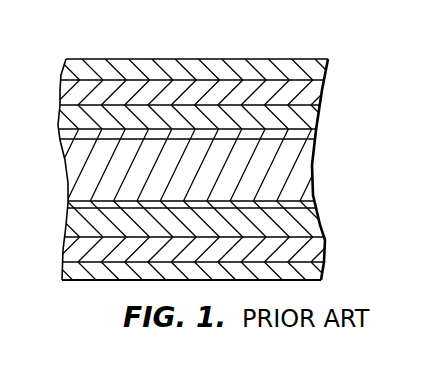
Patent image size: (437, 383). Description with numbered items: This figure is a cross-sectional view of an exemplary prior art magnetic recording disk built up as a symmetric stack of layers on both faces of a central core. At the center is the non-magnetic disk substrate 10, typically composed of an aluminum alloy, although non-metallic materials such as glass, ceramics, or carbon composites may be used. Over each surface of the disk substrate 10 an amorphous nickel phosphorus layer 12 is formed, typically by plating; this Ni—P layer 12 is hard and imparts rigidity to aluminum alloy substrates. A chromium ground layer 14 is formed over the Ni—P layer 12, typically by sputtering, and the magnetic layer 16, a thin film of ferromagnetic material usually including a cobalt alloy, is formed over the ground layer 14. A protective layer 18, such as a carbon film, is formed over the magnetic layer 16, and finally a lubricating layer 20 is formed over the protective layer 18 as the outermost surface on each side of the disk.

The non-magnetic disk substrate 10 is at (295, 173).
The amorphous nickel phosphorus layer 12 is at (297, 138).
The chromium ground layer 14 is at (297, 118).
The magnetic layer 16 is at (305, 93).
The protective layer 18 is at (305, 70).
The lubricating layer 20 is at (275, 59).